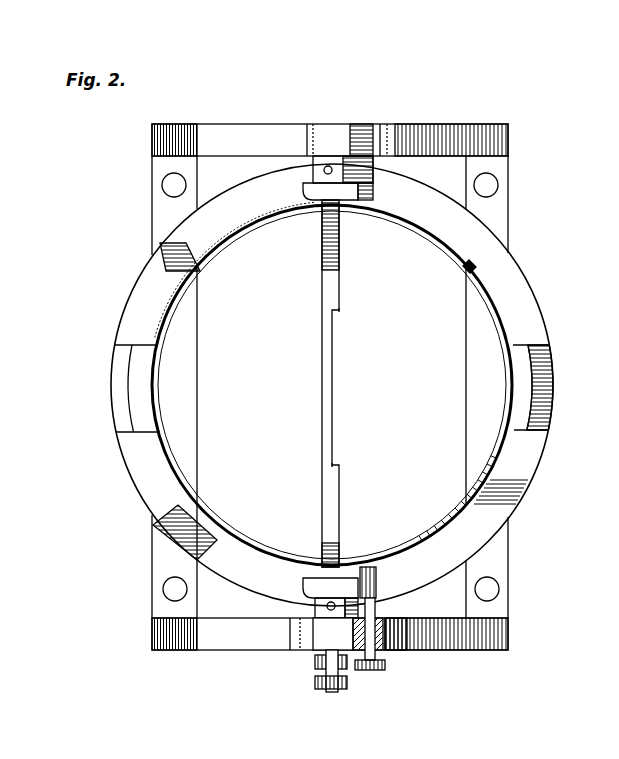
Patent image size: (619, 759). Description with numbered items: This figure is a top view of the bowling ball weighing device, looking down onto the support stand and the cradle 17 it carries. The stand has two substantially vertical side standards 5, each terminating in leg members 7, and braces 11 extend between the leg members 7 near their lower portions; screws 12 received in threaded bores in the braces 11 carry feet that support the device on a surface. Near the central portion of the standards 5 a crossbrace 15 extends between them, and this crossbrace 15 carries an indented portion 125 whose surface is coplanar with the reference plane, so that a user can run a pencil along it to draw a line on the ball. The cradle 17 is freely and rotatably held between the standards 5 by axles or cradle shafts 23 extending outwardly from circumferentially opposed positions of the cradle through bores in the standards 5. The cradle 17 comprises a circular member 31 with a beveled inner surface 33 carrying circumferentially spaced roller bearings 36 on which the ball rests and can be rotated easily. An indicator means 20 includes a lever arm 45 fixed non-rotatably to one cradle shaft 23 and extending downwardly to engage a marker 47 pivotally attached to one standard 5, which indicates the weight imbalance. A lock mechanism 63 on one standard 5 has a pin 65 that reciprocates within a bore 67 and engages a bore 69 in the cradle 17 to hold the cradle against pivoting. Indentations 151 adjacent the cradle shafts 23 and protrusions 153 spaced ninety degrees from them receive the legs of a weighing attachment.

The side standards 5 is at (362, 128).
The leg members 7 is at (452, 128).
The braces 11 is at (152, 226).
The screws 12 is at (498, 185).
The crossbrace 15 is at (322, 291).
The cradle 17 is at (541, 492).
The indicator means 20 is at (305, 668).
The cradle shafts 23 is at (345, 186).
The circular member 31 is at (530, 285).
The beveled inner surface 33 is at (507, 342).
The roller bearings 36 is at (198, 262).
The lever arm 45 is at (345, 689).
The marker 47 is at (333, 634).
The lock mechanism 63 is at (397, 627).
The pin 65 is at (381, 671).
The bore 67 is at (371, 630).
The bore 69 is at (366, 602).
The indented portion 125 is at (334, 386).
The indentations 151 is at (312, 203).
The protrusions 153 is at (110, 392).